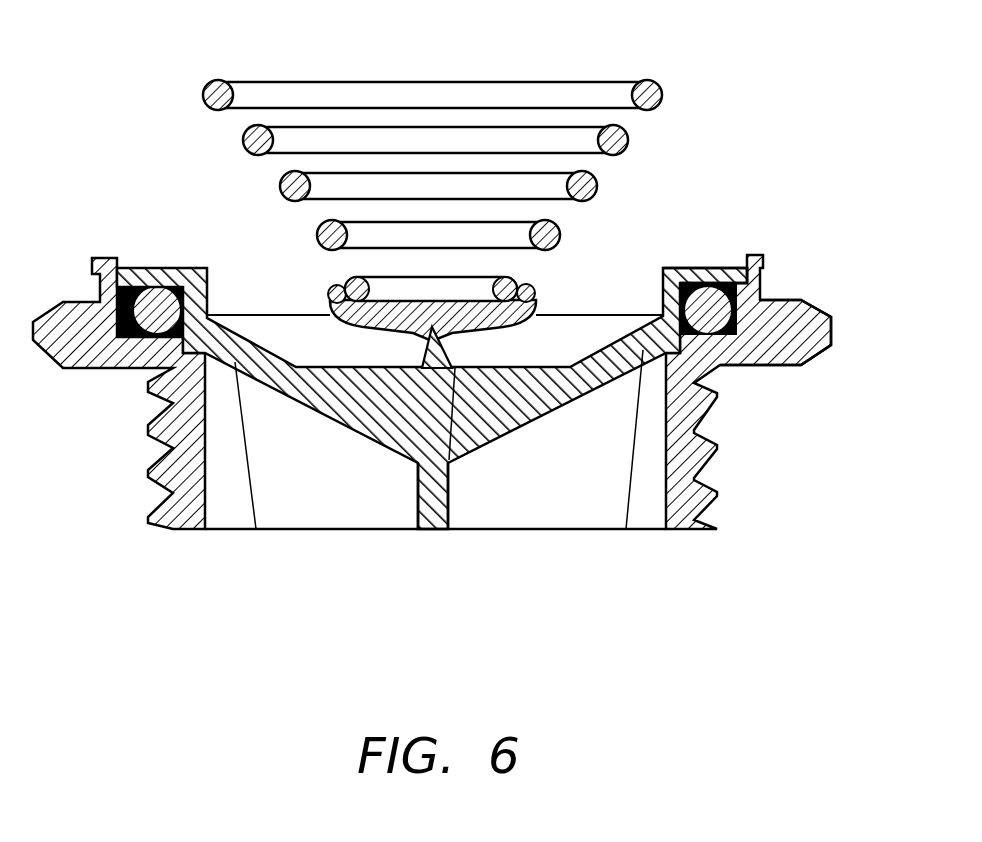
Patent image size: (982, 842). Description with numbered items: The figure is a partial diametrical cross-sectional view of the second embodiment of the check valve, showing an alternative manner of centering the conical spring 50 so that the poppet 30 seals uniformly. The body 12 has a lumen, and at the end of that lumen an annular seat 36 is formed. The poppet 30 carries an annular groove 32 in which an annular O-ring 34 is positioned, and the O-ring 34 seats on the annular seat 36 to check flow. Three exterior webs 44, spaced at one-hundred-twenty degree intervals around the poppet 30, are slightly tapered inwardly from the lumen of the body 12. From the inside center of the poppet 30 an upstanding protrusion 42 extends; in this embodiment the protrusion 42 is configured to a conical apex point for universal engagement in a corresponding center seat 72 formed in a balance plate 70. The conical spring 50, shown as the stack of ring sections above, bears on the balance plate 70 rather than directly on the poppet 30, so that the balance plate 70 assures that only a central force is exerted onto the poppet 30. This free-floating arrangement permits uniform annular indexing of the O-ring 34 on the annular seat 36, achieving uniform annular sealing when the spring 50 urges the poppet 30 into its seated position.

The body 12 is at (720, 488).
The poppet 30 is at (233, 364).
The annular groove 32 is at (708, 267).
The annular O-ring 34 is at (760, 295).
The annular seat 36 is at (722, 360).
The protrusion 42 is at (428, 327).
The exterior webs 44 is at (297, 503).
The conical spring 50 is at (432, 90).
The balance plate 70 is at (528, 302).
The center seat 72 is at (455, 385).